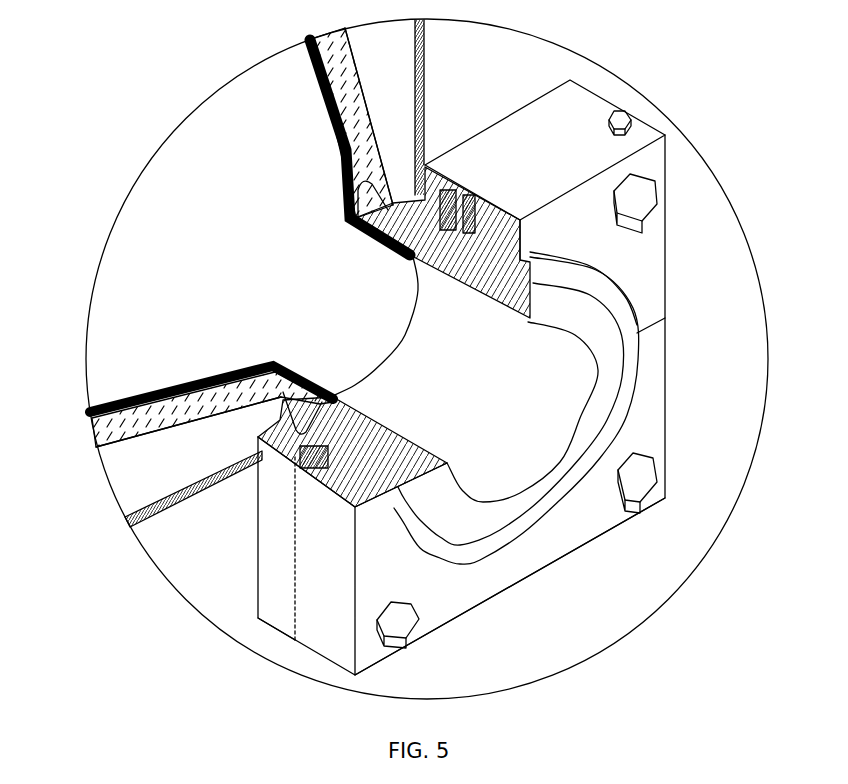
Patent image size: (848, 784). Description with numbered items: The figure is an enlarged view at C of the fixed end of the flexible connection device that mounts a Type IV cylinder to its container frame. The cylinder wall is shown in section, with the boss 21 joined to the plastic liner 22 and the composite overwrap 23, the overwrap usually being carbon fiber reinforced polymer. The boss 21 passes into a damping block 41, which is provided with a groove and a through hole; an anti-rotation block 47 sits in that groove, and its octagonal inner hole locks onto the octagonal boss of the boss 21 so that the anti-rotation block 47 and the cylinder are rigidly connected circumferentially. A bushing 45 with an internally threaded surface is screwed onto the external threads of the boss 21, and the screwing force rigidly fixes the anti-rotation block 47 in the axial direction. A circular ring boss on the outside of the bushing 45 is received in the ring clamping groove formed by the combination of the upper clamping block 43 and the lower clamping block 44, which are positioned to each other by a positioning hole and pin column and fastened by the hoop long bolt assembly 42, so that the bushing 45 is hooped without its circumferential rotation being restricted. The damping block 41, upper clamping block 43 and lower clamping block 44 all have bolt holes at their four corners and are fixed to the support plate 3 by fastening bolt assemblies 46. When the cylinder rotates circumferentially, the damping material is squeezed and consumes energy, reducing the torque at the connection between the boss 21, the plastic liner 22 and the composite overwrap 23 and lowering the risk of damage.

The support plate 3 is at (143, 510).
The boss 21 is at (417, 460).
The plastic liner 22 is at (340, 172).
The composite overwrap 23 is at (358, 127).
The damping block 41 is at (272, 501).
The hoop long bolt assembly 42 is at (622, 120).
The upper clamping block 43 is at (643, 283).
The lower clamping block 44 is at (315, 589).
The bushing 45 is at (627, 377).
The fastening bolt assembly 46 is at (643, 198).
The anti-rotation block 47 is at (447, 205).
The enlarged view region C is at (668, 600).